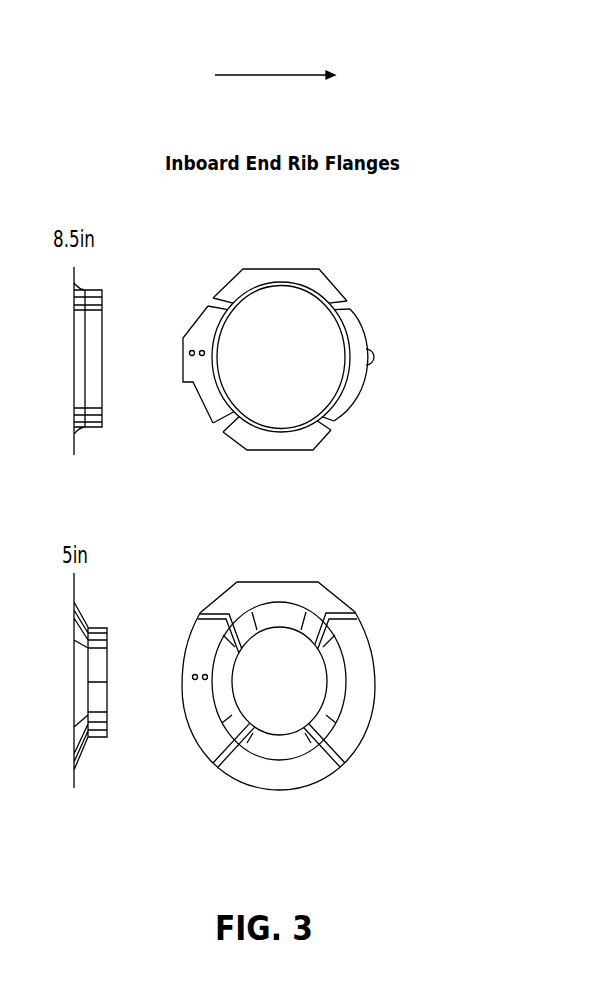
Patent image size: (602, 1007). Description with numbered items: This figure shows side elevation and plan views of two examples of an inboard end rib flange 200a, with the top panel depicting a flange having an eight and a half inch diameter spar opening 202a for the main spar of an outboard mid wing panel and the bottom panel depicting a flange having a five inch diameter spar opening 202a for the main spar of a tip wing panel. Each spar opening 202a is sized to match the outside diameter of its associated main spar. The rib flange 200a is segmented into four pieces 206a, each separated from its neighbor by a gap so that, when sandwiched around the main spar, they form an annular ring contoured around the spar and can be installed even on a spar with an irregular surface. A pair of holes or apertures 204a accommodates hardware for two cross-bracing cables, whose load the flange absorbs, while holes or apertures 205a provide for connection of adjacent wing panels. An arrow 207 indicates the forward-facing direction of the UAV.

The arrow 207 is at (287, 73).
The inboard end rib flange 200a is at (490, 68).
The pieces 206a is at (278, 278).
The spar opening 202a is at (323, 352).
The holes or apertures 205a is at (355, 372).
The holes or apertures 204a is at (202, 351).